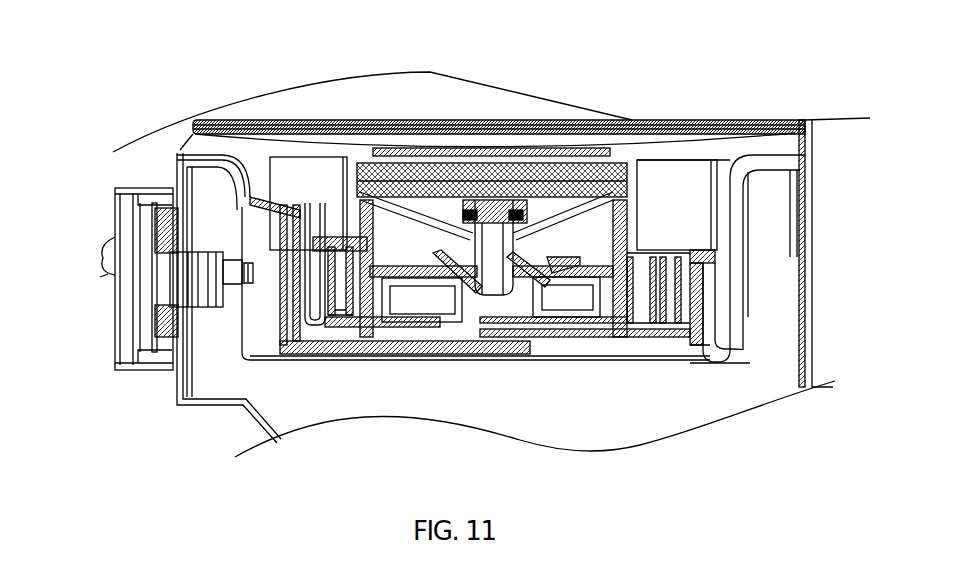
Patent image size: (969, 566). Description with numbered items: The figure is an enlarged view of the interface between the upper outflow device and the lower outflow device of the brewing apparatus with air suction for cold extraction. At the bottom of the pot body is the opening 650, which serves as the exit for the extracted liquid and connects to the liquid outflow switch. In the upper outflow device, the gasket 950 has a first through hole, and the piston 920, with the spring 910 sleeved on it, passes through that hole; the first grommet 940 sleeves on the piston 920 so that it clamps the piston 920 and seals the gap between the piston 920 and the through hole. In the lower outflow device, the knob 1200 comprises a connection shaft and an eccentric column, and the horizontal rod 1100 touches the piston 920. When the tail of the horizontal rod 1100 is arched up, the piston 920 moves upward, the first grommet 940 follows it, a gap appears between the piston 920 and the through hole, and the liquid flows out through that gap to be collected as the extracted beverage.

The opening 650 is at (420, 138).
The spring 910 is at (527, 213).
The first grommet 940 is at (517, 225).
The piston 920 is at (497, 293).
The gasket 950 is at (643, 292).
The horizontal rod 1100 is at (368, 358).
The knob 1200 is at (115, 275).